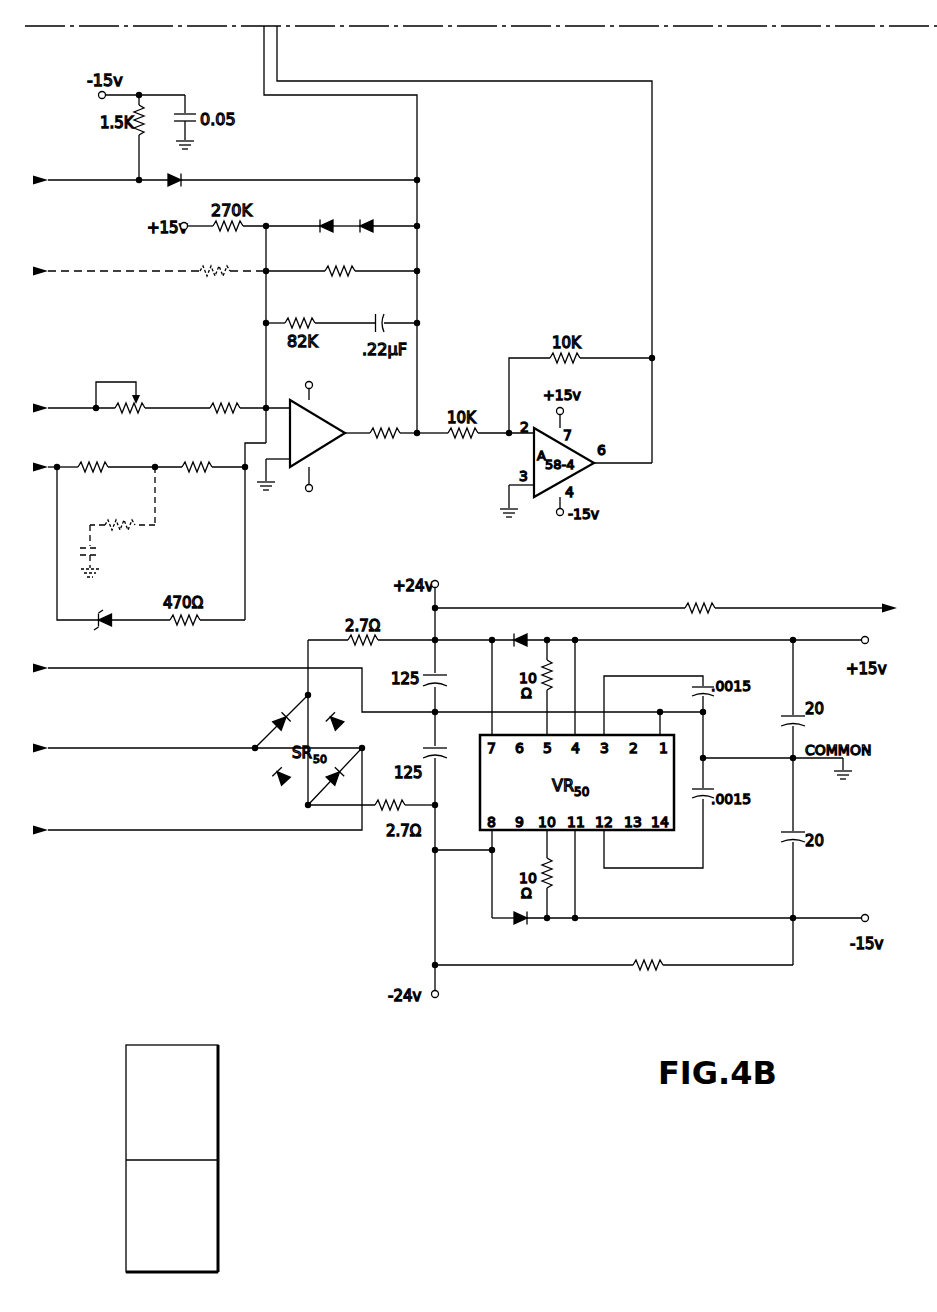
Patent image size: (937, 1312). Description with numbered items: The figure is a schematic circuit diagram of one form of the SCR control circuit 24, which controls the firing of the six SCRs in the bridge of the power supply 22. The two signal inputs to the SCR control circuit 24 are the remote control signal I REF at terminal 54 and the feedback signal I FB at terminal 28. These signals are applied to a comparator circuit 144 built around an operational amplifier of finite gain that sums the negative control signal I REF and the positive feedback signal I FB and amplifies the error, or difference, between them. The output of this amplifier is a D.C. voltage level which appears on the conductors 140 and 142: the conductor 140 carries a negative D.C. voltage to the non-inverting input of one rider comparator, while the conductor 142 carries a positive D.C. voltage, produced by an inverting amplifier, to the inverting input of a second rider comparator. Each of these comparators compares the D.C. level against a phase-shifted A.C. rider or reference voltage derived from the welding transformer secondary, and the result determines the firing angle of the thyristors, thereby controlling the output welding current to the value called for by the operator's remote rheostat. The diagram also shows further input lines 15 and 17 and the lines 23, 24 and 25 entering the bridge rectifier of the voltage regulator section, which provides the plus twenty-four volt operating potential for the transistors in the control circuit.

In FIG. 4B, the conductor 140 is at (262, 56).
In FIG. 4B, the conductor 142 is at (279, 67).
In FIG. 4B, the input line 15 is at (225, 169).
In FIG. 4B, the input line 17 is at (225, 273).
In FIG. 4B, the terminal 54 is at (40, 405).
In FIG. 4B, the terminal 28 is at (133, 469).
In FIG. 4B, the comparator circuit 144 is at (413, 525).
In FIG. 4B, the power supply 22 is at (673, 610).
In FIG. 4B, the input line 23 is at (235, 676).
In FIG. 4B, the SCR control circuit 24 is at (144, 737).
In FIG. 4, the SCR control circuit 24 is at (447, 1232).
In FIG. 4B, the input line 25 is at (197, 791).